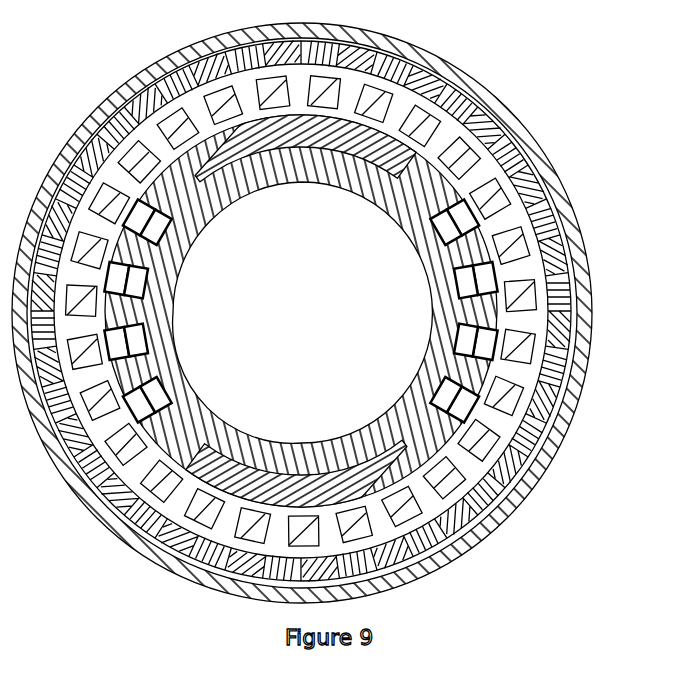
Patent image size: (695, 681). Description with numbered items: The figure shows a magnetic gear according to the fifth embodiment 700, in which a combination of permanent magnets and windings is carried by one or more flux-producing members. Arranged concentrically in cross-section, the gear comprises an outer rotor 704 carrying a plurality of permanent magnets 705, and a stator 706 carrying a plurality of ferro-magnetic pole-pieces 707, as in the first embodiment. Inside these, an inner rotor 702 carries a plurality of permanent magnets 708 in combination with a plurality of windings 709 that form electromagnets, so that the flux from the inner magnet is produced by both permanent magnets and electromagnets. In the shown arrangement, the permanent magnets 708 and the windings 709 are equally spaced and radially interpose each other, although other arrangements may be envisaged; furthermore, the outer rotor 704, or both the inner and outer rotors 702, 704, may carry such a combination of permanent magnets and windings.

The fifth embodiment 700 is at (490, 536).
The inner rotor 702 is at (167, 250).
The outer rotor 704 is at (478, 99).
The permanent magnets 705 is at (517, 158).
The stator 706 is at (507, 220).
The ferro-magnetic pole-pieces 707 is at (522, 240).
The permanent magnets 708 is at (307, 133).
The windings 709 is at (133, 343).